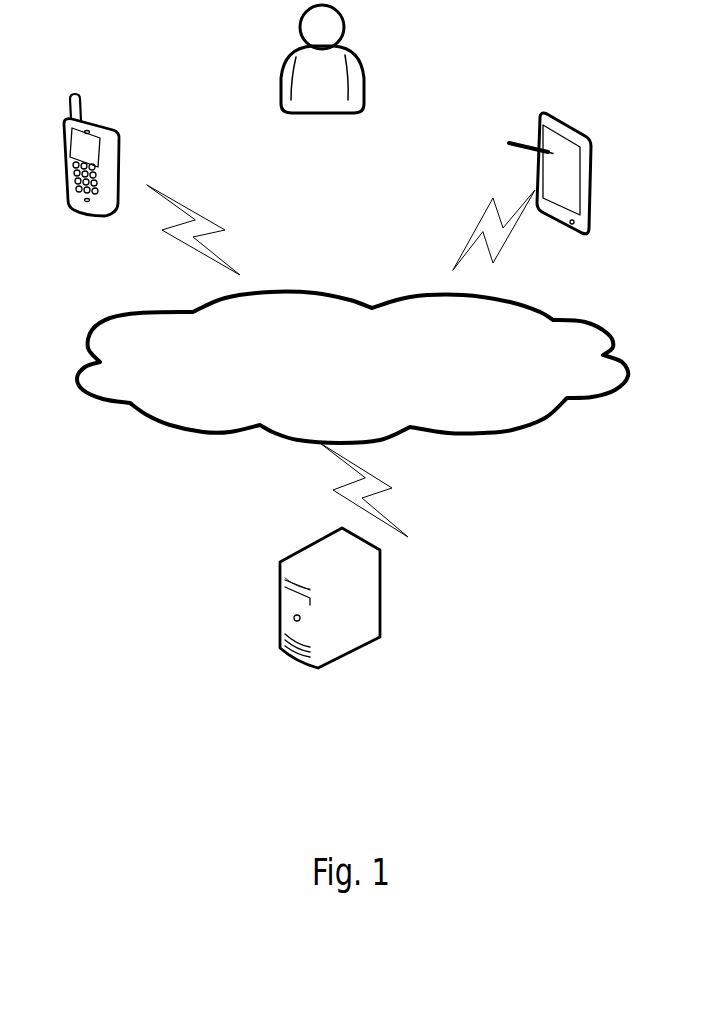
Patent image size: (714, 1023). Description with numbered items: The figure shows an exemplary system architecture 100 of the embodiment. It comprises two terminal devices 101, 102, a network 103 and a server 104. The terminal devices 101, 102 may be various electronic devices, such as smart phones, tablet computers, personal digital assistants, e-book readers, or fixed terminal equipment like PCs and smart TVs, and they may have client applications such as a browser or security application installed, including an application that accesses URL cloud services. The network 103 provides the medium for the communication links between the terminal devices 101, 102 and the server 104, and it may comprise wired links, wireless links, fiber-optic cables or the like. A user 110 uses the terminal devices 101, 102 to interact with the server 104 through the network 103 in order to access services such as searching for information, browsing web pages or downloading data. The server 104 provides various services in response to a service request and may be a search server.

The system architecture 100 is at (547, 48).
The terminal device 101 is at (91, 172).
The terminal device 102 is at (550, 191).
The network 103 is at (352, 367).
The server 104 is at (330, 615).
The user 110 is at (322, 78).